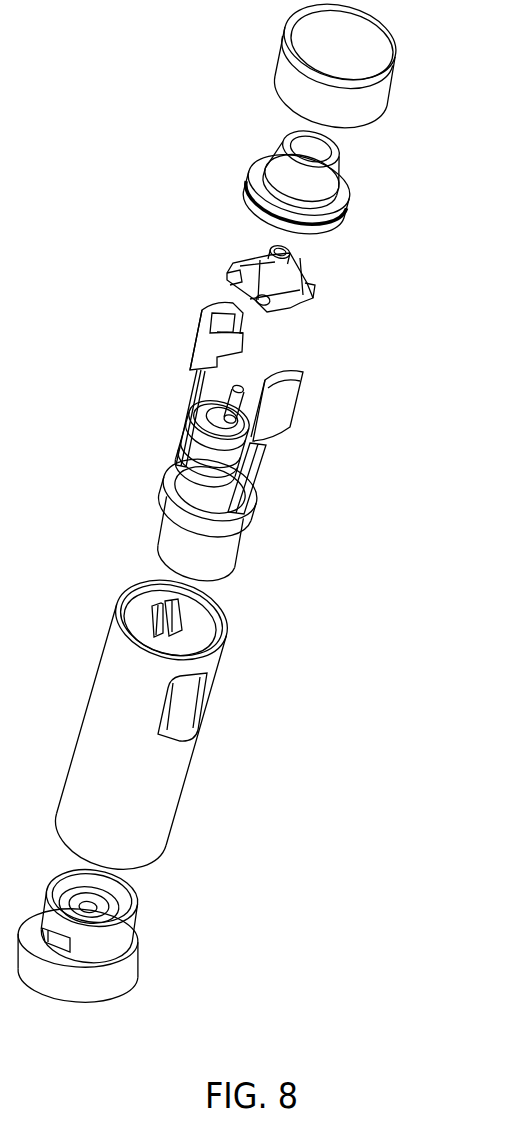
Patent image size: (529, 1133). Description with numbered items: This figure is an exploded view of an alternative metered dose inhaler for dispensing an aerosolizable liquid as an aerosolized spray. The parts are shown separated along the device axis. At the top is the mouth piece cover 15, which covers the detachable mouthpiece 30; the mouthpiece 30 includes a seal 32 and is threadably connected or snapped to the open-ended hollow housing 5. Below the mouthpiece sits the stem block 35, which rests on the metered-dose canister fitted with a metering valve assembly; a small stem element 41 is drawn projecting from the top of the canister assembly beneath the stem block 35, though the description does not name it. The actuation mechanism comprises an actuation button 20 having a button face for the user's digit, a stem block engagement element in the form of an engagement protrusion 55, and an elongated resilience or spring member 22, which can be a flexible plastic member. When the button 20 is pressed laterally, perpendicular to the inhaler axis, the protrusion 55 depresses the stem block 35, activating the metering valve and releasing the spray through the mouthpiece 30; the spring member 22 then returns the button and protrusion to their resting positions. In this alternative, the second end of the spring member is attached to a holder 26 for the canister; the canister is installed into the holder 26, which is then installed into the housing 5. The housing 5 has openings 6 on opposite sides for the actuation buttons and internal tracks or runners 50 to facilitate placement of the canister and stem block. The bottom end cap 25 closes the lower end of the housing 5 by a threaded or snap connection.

The mouth piece cover 15 is at (370, 100).
The mouthpiece 30 is at (325, 194).
The seal 32 is at (337, 215).
The stem block 35 is at (288, 290).
The engagement protrusion 55 is at (213, 353).
The valve stem 41 is at (237, 398).
The actuation button 20 is at (283, 408).
The resilience or spring member 22 is at (258, 474).
The holder 26 is at (240, 527).
The tracks or runners 50 is at (168, 623).
The openings 6 is at (202, 704).
The hollow housing 5 is at (162, 822).
The bottom end cap 25 is at (135, 973).